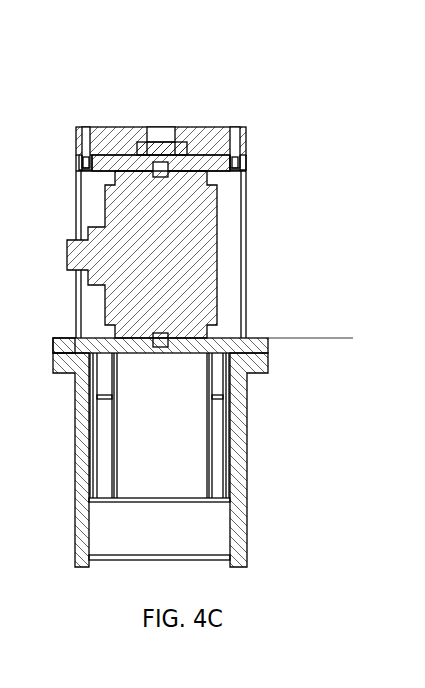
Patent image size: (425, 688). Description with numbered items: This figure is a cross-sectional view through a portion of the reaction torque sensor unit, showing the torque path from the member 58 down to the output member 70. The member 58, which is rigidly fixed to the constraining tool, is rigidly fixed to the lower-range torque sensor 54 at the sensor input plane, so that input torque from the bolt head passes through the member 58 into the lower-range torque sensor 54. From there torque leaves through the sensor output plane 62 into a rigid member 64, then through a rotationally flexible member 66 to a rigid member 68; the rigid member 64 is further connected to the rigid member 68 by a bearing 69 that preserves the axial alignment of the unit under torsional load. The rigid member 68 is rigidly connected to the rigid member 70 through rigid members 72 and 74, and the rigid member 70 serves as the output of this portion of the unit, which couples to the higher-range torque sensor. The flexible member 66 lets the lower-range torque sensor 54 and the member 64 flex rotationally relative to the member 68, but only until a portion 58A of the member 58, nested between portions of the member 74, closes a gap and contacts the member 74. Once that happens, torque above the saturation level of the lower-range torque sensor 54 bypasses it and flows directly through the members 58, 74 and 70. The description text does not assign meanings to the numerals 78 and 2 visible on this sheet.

The lower-range torque sensor 54 is at (218, 266).
The member 58 is at (269, 345).
The portion of the member 58A is at (64, 343).
The sensor output plane 62 is at (247, 170).
The rigid member 64 is at (247, 165).
The rotationally flexible member 66 is at (247, 157).
The rigid member 68 is at (247, 130).
The bearing 69 is at (138, 144).
The rigid member 70 is at (248, 462).
The rigid member 72 is at (247, 248).
The rigid member 74 is at (11, 548).
The crossbar 78 is at (153, 500).
The partial numeral (cut off) 2 is at (2, 491).